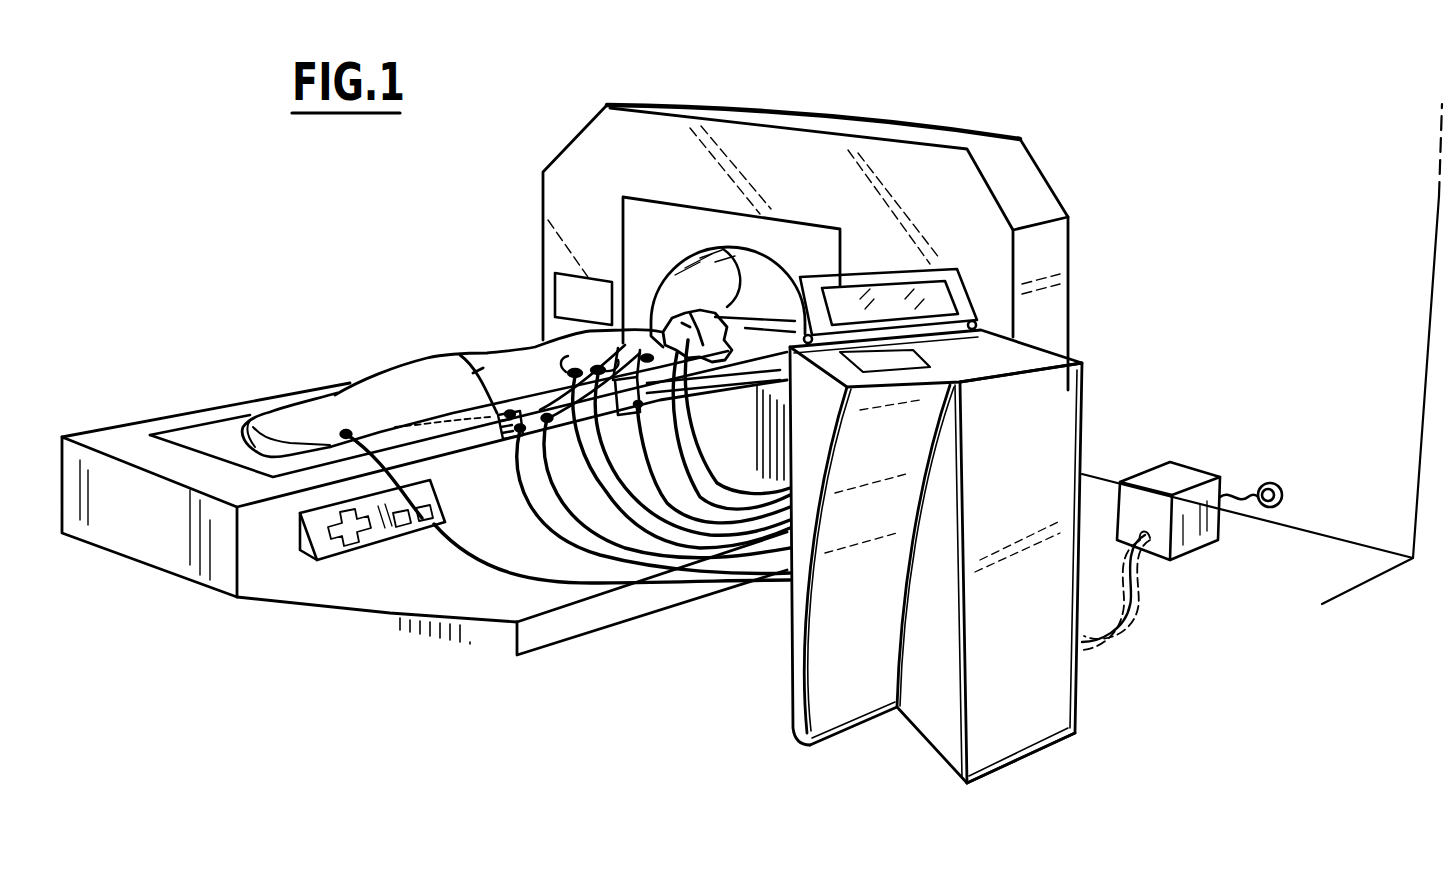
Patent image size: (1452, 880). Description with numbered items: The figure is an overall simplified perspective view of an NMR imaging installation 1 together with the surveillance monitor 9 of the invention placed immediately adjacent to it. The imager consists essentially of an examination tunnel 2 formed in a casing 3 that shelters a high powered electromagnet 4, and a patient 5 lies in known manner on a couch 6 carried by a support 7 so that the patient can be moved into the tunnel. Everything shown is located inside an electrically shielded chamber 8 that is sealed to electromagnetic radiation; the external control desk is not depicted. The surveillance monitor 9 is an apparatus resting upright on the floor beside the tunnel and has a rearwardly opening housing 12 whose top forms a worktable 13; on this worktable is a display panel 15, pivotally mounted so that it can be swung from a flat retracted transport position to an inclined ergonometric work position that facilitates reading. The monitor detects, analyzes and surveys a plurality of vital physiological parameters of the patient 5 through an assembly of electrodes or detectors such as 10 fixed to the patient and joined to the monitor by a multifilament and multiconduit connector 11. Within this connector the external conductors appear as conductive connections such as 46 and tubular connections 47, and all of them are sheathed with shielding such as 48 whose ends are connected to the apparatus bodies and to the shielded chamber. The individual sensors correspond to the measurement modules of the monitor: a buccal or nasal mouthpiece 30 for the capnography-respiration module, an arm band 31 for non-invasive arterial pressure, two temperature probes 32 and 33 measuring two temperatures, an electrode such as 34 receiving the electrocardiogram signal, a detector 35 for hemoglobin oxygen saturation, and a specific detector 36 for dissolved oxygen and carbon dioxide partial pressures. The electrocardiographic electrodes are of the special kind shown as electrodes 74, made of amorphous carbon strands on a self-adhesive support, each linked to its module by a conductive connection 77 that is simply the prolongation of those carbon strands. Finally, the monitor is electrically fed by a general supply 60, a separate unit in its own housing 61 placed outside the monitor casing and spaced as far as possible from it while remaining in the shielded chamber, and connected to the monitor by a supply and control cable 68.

The NMR imaging installation 1 is at (640, 670).
The examination tunnel 2 is at (655, 262).
The casing 3 is at (790, 100).
The high powered electromagnet 4 is at (780, 246).
The patient 5 is at (480, 346).
The couch 6 is at (212, 440).
The support 7 is at (170, 585).
The electrically shielded chamber 8 is at (1275, 573).
The surveillance monitor 9 is at (1036, 334).
The electrodes or detectors 10 is at (496, 448).
The multifilament and multiconduit connector 11 is at (510, 576).
The housing 12 is at (926, 705).
The worktable 13 is at (1040, 363).
The display panel 15 is at (894, 268).
The buccal or nasal mouthpiece 30 is at (697, 300).
The arm band 31 is at (630, 422).
The temperature probe 32 is at (628, 335).
The temperature probe 33 is at (324, 437).
The electrode 34 is at (557, 358).
The detector 35 is at (510, 448).
The specific detector 36 is at (480, 373).
The conductive connections 46 is at (753, 566).
The tubular connections 47 is at (692, 437).
The shielding 48 is at (1148, 580).
The general supply 60 is at (1206, 458).
The housing 61 is at (1160, 478).
The supply and control cable 68 is at (1130, 632).
The electrodes 74 is at (592, 350).
The conductive connection 77 is at (578, 434).